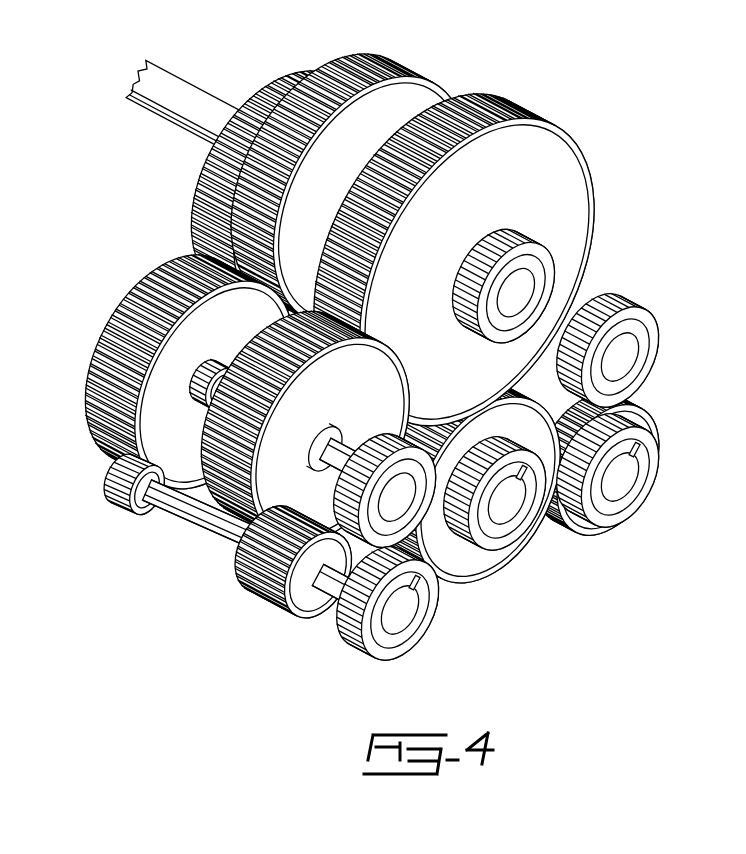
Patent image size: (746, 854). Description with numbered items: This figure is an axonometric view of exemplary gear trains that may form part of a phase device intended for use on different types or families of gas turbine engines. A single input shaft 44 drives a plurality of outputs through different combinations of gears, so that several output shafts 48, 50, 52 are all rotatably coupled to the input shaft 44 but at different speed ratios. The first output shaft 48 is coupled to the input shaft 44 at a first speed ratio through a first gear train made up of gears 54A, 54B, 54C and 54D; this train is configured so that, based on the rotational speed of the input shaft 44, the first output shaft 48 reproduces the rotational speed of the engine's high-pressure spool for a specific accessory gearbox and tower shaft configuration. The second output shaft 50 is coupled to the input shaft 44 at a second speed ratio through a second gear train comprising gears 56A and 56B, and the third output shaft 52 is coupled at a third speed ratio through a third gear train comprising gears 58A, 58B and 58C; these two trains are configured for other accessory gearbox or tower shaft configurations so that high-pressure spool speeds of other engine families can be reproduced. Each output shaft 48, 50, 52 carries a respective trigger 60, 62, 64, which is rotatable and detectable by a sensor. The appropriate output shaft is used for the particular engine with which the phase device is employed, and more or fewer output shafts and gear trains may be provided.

The input shaft 44 is at (187, 93).
The first output shaft 48 is at (405, 625).
The second output shaft 50 is at (503, 541).
The third output shaft 52 is at (610, 512).
The gear 54A is at (267, 592).
The gear 54B is at (215, 512).
The gear 54C is at (104, 466).
The gear 54D is at (206, 214).
The gear 56A is at (454, 555).
The gear 56B is at (568, 174).
The gear 58A is at (565, 413).
The gear 58B is at (584, 295).
The gear 58C is at (440, 95).
The trigger 60 is at (432, 613).
The trigger 62 is at (533, 512).
The trigger 64 is at (648, 471).